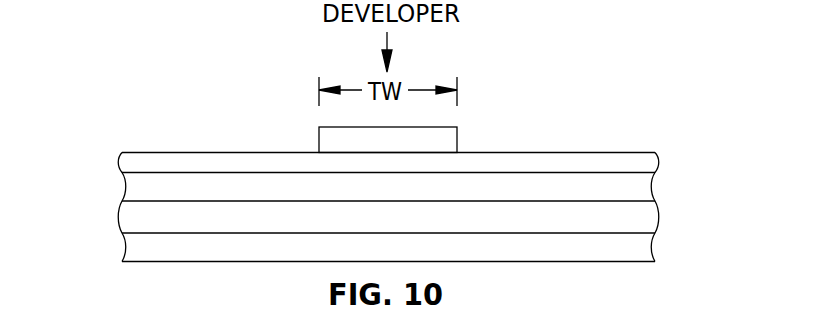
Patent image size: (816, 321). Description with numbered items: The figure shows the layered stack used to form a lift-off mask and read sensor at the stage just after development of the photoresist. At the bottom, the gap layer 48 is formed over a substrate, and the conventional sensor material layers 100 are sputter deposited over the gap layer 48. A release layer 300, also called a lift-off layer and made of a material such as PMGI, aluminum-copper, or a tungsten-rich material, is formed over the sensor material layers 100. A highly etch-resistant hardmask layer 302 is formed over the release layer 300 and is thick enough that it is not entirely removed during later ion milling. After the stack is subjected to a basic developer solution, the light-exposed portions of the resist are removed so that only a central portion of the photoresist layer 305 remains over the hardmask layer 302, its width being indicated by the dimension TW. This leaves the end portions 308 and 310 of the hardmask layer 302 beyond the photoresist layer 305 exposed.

The gap layer 48 is at (132, 248).
The sensor material layers 100 is at (132, 212).
The release layer 300 is at (630, 195).
The hardmask layer 302 is at (630, 168).
The photoresist layer 305 is at (333, 133).
The end portion of hardmask layer 308 is at (158, 188).
The end portion of hardmask layer 310 is at (593, 192).